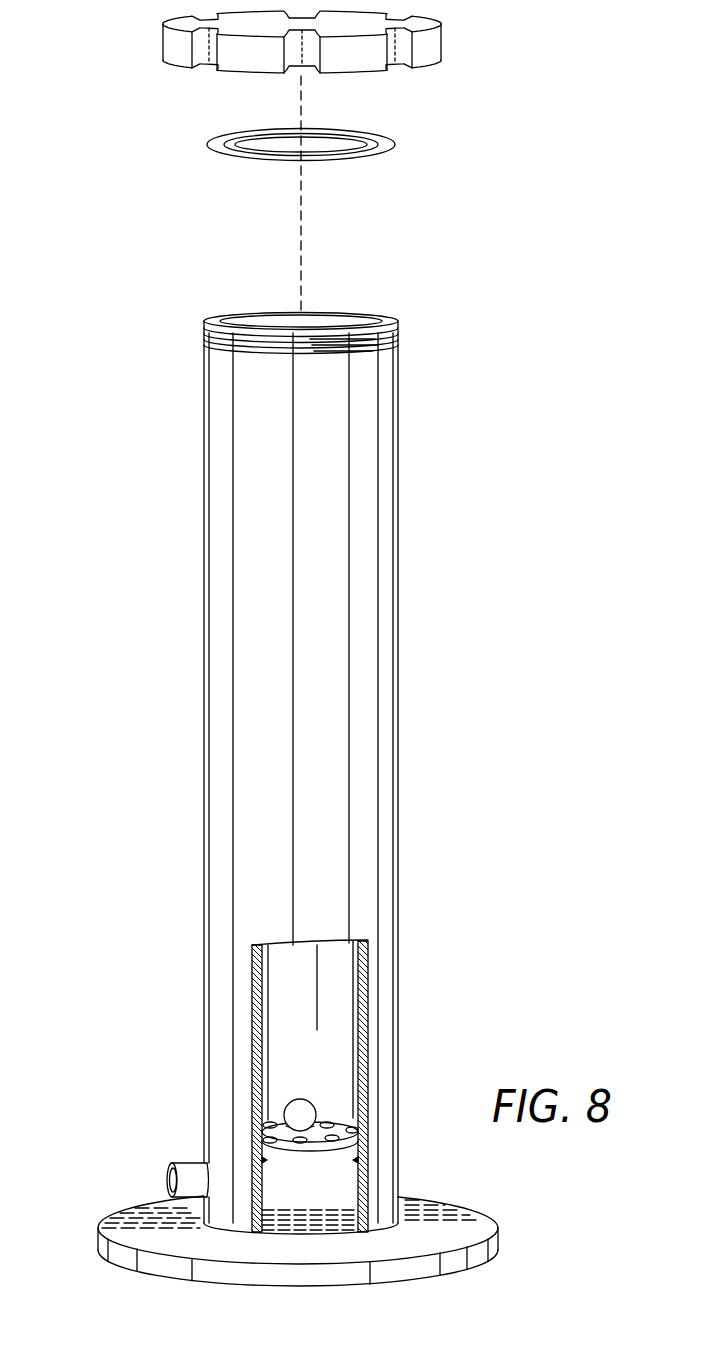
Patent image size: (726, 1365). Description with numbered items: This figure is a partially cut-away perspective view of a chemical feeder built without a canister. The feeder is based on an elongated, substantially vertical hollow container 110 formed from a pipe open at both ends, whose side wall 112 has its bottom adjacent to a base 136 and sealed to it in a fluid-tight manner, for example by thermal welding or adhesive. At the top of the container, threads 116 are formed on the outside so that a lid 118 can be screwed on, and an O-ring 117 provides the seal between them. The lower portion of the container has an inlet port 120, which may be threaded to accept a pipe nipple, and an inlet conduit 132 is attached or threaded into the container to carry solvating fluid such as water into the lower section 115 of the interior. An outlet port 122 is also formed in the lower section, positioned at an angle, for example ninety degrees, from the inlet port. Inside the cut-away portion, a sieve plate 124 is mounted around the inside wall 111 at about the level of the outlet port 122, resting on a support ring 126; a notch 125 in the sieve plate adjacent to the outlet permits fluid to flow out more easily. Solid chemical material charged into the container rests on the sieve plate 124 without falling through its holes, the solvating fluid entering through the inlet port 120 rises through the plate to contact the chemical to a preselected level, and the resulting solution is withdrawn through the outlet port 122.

The container 110 is at (197, 457).
The inside wall 111 is at (204, 685).
The side wall 112 is at (203, 592).
The lower section 115 is at (305, 1197).
The threads 116 is at (398, 340).
The O-ring 117 is at (356, 140).
The lid 118 is at (168, 43).
The inlet port 120 is at (210, 1177).
The outlet port 122 is at (287, 1103).
The sieve plate 124 is at (342, 1120).
The notch 125 is at (302, 1122).
The support ring 126 is at (263, 1158).
The inlet conduit 132 is at (172, 1163).
The base 136 is at (98, 1234).